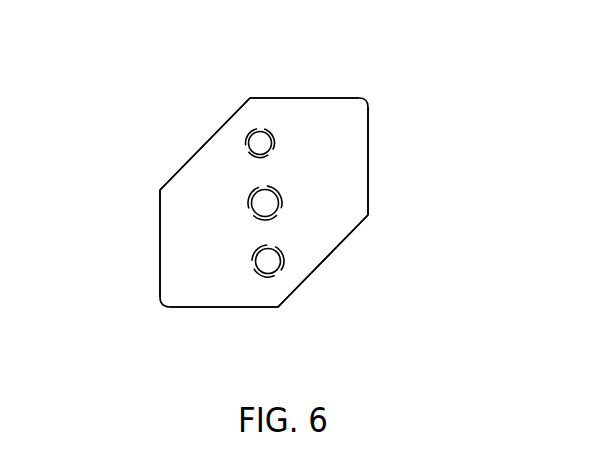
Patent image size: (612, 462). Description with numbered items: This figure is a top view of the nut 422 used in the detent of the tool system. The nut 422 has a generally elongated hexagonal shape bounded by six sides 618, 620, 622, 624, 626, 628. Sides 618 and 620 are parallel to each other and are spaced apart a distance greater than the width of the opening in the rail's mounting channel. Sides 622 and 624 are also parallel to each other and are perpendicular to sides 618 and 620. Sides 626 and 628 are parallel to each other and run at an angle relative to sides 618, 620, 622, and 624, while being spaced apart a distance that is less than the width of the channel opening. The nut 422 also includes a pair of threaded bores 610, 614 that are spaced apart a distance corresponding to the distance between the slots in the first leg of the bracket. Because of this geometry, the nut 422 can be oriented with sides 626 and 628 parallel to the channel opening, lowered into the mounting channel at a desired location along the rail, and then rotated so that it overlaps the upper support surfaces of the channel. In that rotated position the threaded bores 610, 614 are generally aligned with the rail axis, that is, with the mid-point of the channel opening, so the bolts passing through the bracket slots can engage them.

The nut 422 is at (342, 165).
The threaded bore 610 is at (281, 266).
The threaded bore 614 is at (277, 132).
The side 618 is at (368, 183).
The side 620 is at (160, 247).
The side 622 is at (320, 97).
The side 624 is at (225, 308).
The side 626 is at (213, 140).
The side 628 is at (348, 238).